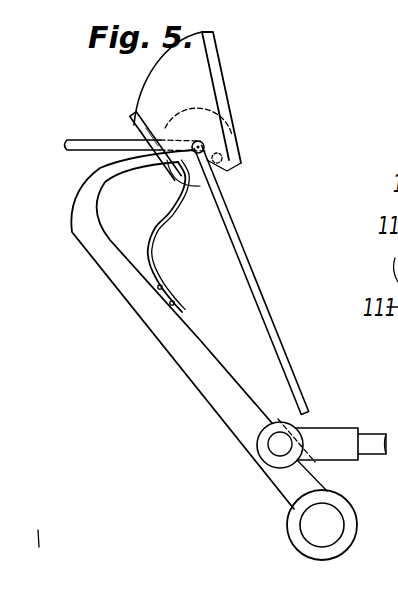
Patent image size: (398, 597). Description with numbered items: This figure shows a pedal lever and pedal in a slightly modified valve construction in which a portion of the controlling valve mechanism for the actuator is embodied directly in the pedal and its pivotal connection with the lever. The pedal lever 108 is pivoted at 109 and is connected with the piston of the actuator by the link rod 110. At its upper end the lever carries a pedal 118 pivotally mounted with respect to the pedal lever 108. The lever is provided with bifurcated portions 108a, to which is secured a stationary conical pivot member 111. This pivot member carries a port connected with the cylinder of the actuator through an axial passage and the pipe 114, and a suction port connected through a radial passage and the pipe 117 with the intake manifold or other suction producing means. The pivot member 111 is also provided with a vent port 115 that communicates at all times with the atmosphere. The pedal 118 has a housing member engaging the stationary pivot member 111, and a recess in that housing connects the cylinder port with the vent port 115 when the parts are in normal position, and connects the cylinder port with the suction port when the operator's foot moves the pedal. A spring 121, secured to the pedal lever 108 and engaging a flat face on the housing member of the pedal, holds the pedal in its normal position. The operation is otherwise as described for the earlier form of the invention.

The pedal lever 108 is at (186, 358).
The bifurcated portions 108a is at (107, 174).
The pivot 109 is at (330, 526).
The link rod 110 is at (380, 446).
The stationary conical pivot member 111 is at (198, 80).
The pipe 114 is at (282, 352).
The vent port 115 is at (220, 163).
The pipe 117 is at (72, 150).
The pedal 118 is at (223, 115).
The spring 121 is at (156, 223).